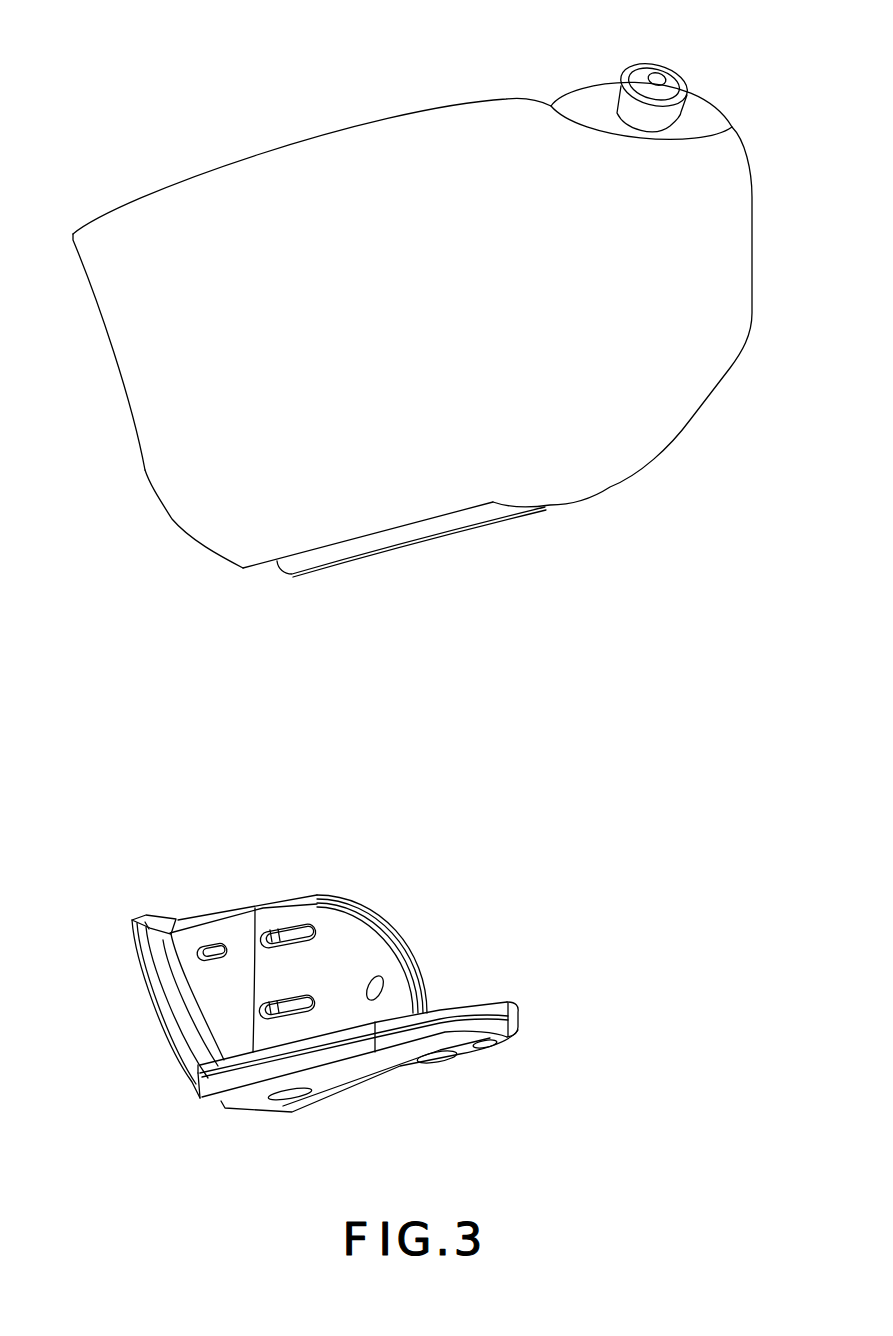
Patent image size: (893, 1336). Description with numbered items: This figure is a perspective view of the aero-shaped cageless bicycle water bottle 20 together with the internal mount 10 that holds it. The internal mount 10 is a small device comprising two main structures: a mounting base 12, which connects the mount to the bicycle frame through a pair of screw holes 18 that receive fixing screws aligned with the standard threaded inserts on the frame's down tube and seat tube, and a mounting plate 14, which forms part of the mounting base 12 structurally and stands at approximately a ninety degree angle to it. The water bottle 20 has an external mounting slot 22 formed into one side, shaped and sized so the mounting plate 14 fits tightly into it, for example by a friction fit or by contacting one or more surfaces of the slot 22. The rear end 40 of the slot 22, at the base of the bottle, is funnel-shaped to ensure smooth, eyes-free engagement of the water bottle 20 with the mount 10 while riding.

The internal mount 10 is at (138, 832).
The mounting base 12 is at (262, 1068).
The mounting plate 14 is at (247, 927).
The screw holes 18 is at (435, 1058).
The aero-shaped cageless bicycle water bottle 20 is at (335, 88).
The mounting slot 22 is at (392, 537).
The rear end of the slot 40 is at (200, 555).